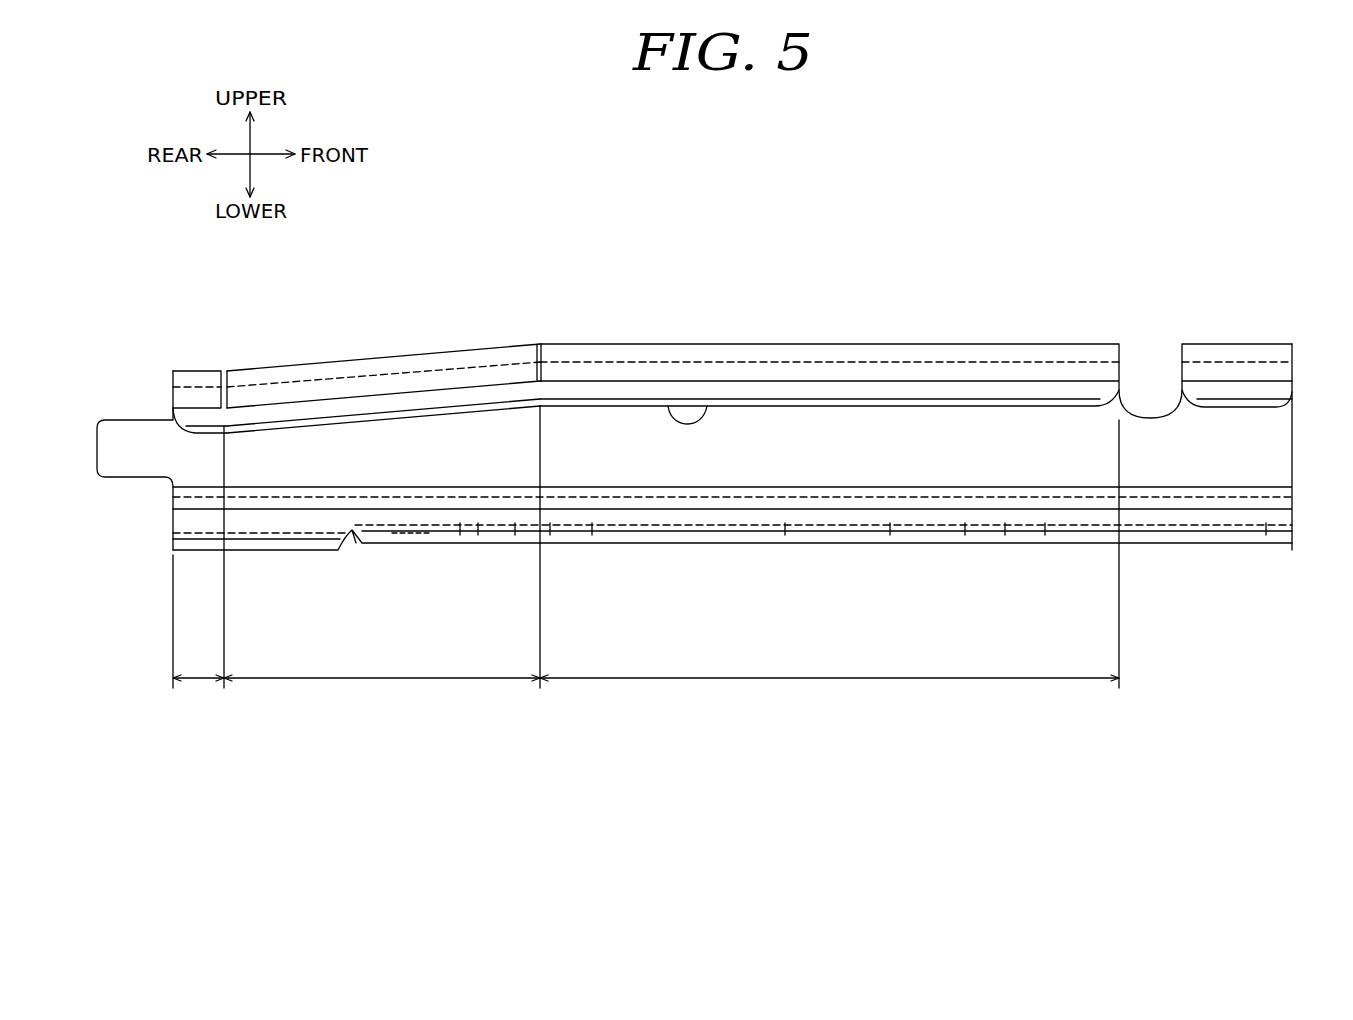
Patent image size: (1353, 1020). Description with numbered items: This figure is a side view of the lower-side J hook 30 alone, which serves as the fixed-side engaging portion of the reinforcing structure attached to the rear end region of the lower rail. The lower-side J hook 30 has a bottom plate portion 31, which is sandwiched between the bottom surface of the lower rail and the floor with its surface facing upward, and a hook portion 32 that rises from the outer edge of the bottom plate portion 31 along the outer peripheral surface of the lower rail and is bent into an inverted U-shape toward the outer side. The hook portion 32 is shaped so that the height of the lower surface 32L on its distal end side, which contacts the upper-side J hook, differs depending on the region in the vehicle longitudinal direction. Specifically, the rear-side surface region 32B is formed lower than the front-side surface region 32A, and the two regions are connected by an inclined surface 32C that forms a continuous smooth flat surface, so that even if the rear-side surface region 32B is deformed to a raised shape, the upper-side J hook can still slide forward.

The lower-side J hook 30 is at (972, 281).
The bottom plate portion 31 is at (707, 543).
The hook portion 32 is at (828, 372).
The front-side surface region 32A is at (858, 669).
The rear-side surface region 32B is at (222, 669).
The inclined surface 32C is at (402, 669).
The lower surface on the distal end side 32L is at (667, 406).